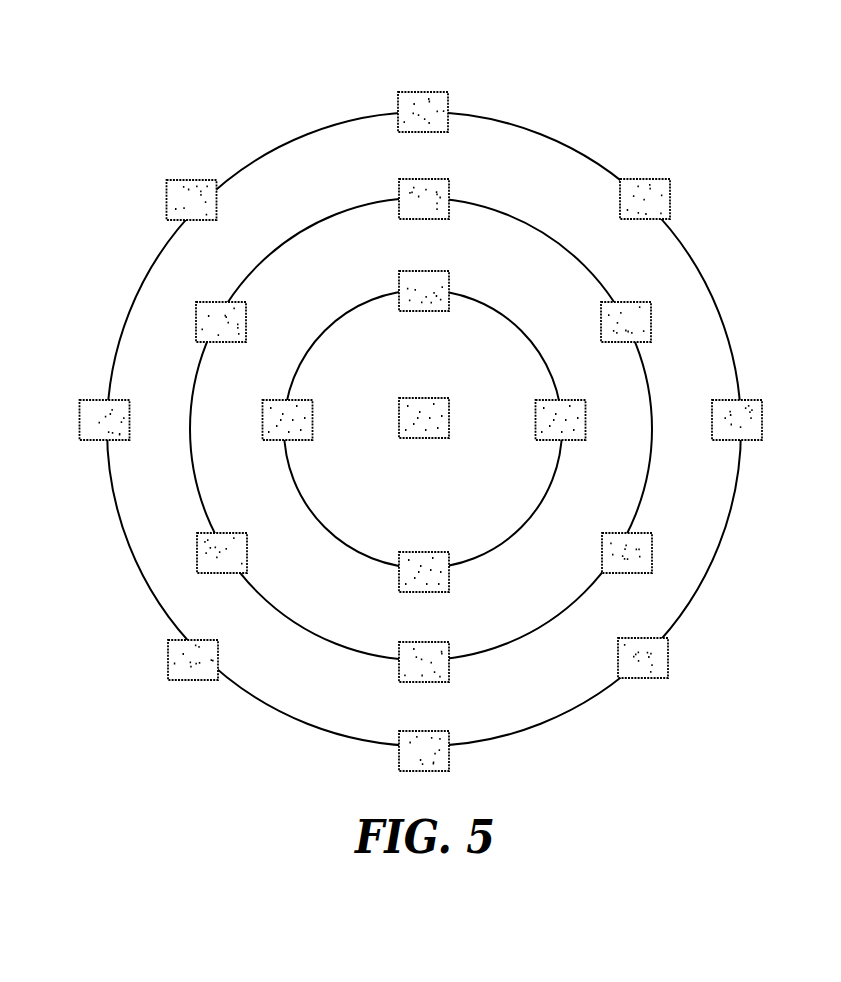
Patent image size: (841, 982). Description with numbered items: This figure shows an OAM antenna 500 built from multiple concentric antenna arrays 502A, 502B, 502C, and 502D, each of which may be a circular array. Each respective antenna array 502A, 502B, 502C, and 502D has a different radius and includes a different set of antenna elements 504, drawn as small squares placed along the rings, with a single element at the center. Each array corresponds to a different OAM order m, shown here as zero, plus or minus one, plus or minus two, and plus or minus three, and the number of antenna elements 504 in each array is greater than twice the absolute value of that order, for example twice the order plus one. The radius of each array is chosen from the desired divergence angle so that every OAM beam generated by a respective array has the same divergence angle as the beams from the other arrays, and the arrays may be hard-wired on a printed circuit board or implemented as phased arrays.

The OAM antenna 500 is at (105, 118).
The concentric antenna array 502A is at (457, 431).
The concentric antenna array 502B is at (649, 378).
The concentric antenna array 502C is at (449, 293).
The concentric antenna array 502D is at (449, 409).
The antenna element 504 is at (762, 418).